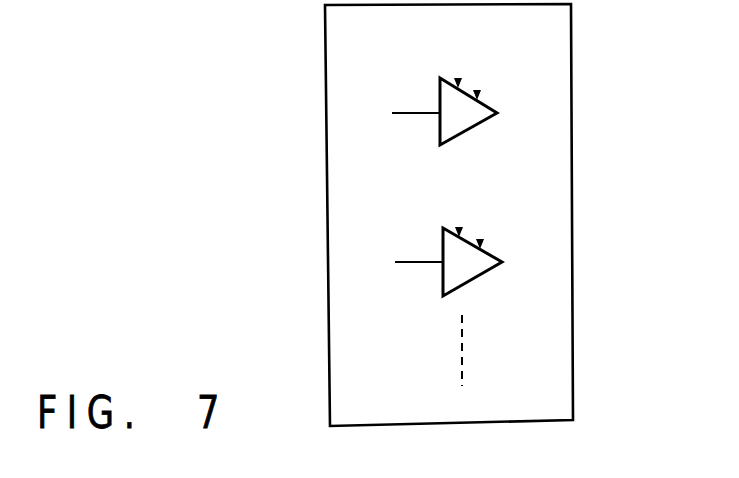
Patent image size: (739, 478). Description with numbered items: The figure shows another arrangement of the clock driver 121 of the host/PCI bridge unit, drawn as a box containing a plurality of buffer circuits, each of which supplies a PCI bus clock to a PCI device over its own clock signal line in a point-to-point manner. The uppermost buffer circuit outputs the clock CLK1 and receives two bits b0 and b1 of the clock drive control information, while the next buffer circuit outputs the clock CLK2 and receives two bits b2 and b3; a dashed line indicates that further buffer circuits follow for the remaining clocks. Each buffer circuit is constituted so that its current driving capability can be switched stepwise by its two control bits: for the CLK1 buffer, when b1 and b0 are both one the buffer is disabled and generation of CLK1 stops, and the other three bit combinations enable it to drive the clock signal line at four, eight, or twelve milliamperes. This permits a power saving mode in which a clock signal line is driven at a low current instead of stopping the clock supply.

The clock driver 121 is at (572, 21).
The clock drive control information bit b0 is at (477, 92).
The clock drive control information bit b1 is at (458, 80).
The clock drive control information bit b2 is at (480, 240).
The clock drive control information bit b3 is at (459, 229).
The PCI bus clock CLK1 is at (497, 113).
The PCI bus clock CLK2 is at (502, 262).